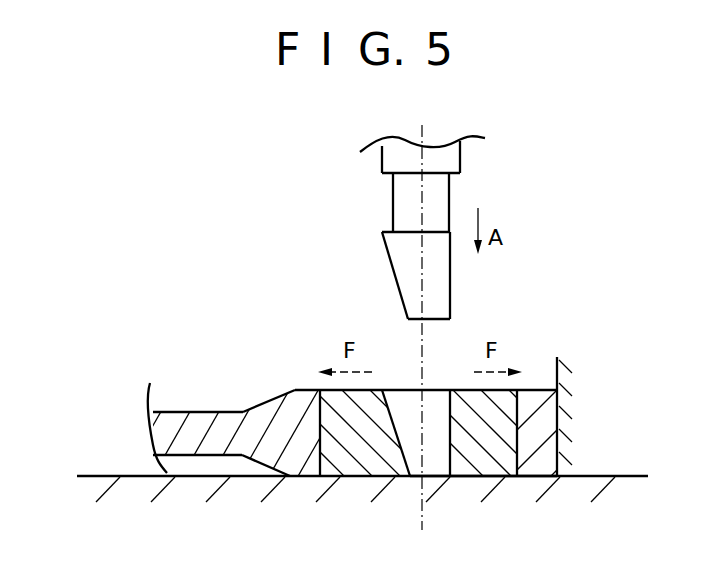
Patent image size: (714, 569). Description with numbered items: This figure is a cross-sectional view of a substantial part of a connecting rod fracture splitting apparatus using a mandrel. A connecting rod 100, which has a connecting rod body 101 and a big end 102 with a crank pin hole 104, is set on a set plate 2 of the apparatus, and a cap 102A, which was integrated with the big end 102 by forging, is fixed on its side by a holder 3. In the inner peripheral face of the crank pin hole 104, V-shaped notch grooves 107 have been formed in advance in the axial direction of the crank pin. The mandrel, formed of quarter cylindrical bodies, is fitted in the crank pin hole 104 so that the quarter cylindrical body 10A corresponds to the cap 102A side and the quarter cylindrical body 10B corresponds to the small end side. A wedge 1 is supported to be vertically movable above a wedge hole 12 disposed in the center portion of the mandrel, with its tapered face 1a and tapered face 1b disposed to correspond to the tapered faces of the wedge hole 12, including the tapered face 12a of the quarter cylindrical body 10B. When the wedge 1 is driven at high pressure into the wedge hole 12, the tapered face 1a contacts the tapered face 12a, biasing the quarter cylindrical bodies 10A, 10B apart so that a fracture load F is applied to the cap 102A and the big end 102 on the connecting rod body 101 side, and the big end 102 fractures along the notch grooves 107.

The wedge 1 is at (416, 240).
The tapered face of the wedge 1a is at (393, 272).
The tapered face of the wedge 1b is at (437, 289).
The set plate 2 is at (598, 476).
The holder 3 is at (556, 358).
The quarter cylindrical body 10A is at (512, 402).
The quarter cylindrical body 10B is at (272, 400).
The wedge hole 12 is at (411, 436).
The tapered face of the wedge hole 12a is at (392, 410).
The connecting rod 100 is at (118, 396).
The connecting rod body 101 is at (186, 413).
The big end 102 is at (307, 390).
The cap 102A is at (547, 426).
The crank pin hole 104 is at (517, 460).
The notch grooves 107 is at (425, 437).